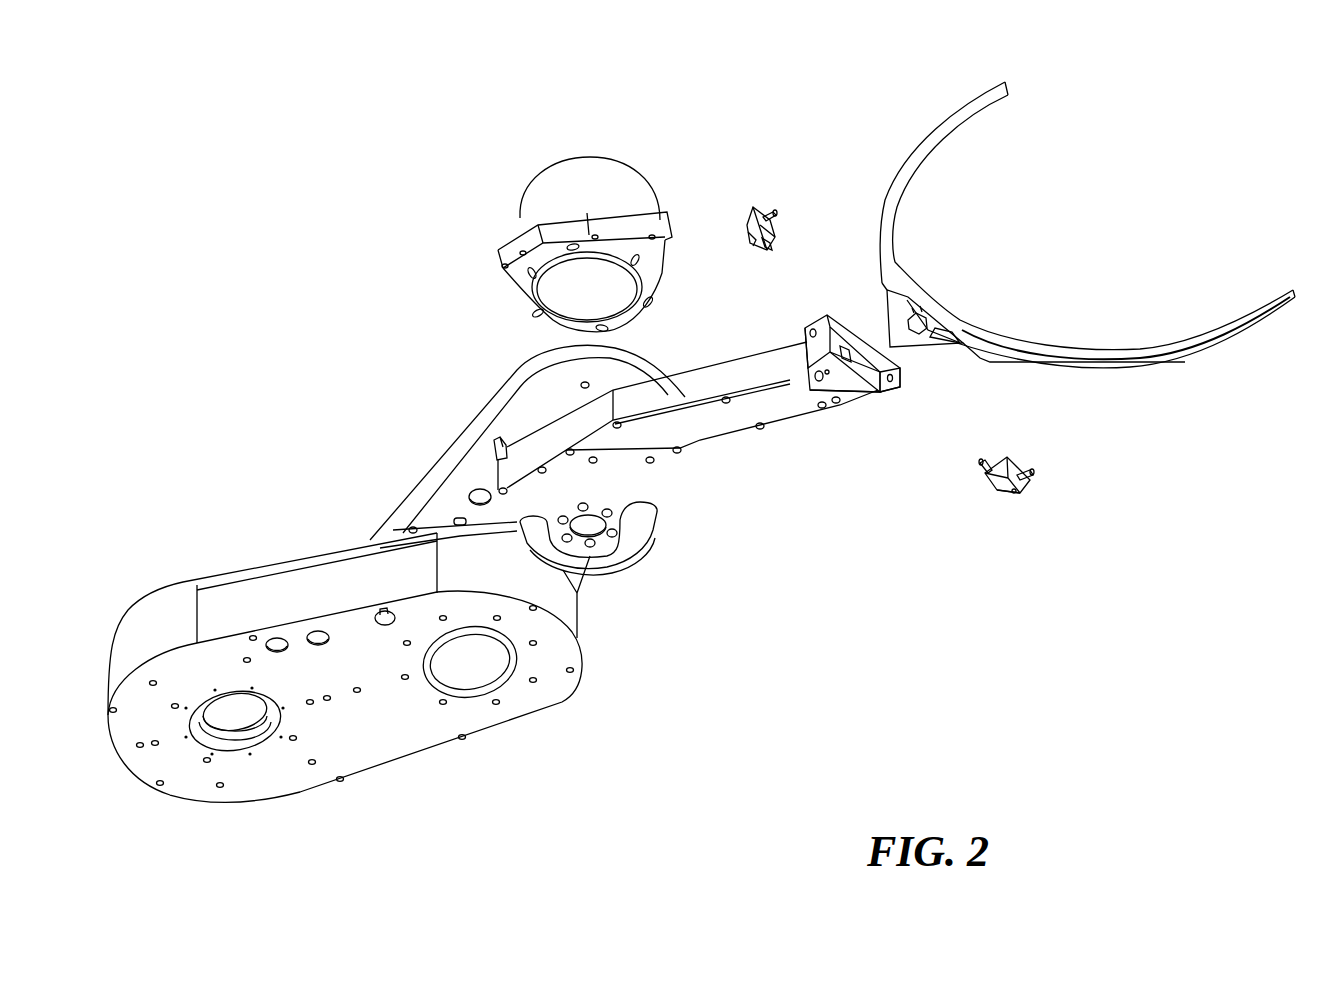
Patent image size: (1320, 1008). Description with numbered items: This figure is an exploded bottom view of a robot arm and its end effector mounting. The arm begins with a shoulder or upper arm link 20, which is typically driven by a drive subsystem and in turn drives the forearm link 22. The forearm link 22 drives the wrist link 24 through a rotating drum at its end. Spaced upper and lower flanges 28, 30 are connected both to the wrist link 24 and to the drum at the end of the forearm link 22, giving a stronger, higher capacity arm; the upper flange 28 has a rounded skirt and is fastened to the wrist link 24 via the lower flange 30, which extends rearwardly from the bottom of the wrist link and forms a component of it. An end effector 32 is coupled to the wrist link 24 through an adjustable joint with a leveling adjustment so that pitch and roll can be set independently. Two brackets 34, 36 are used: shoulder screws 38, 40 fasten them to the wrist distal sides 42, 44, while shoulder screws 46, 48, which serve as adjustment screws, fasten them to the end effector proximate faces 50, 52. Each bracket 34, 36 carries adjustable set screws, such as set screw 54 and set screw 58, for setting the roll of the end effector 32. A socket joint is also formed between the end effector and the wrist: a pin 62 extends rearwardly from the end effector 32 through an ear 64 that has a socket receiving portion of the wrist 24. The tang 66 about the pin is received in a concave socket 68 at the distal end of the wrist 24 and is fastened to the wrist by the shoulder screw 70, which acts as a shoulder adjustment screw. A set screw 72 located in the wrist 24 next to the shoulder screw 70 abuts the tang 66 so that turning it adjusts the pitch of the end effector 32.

The shoulder link 20 is at (173, 584).
The forearm link 22 is at (420, 473).
The wrist link 24 is at (714, 452).
The upper flange 28 is at (518, 296).
The lower flange 30 is at (648, 552).
The end effector 32 is at (945, 112).
The bracket 34 is at (750, 207).
The bracket 36 is at (1023, 490).
The shoulder screw 38 is at (771, 251).
The shoulder screw 40 is at (983, 467).
The wrist distal side 42 is at (805, 316).
The wrist distal side 44 is at (882, 392).
The shoulder screw 46 is at (772, 216).
The shoulder screw 48 is at (1034, 470).
The end effector proximate face 50 is at (882, 287).
The end effector proximate face 52 is at (982, 360).
The set screw 54 is at (751, 241).
The set screw 58 is at (1015, 494).
The pin 62 is at (949, 330).
The ear 64 is at (859, 391).
The tang 66 is at (944, 352).
The concave socket 68 is at (842, 401).
The shoulder screw 70 is at (816, 381).
The set screw 72 is at (830, 393).